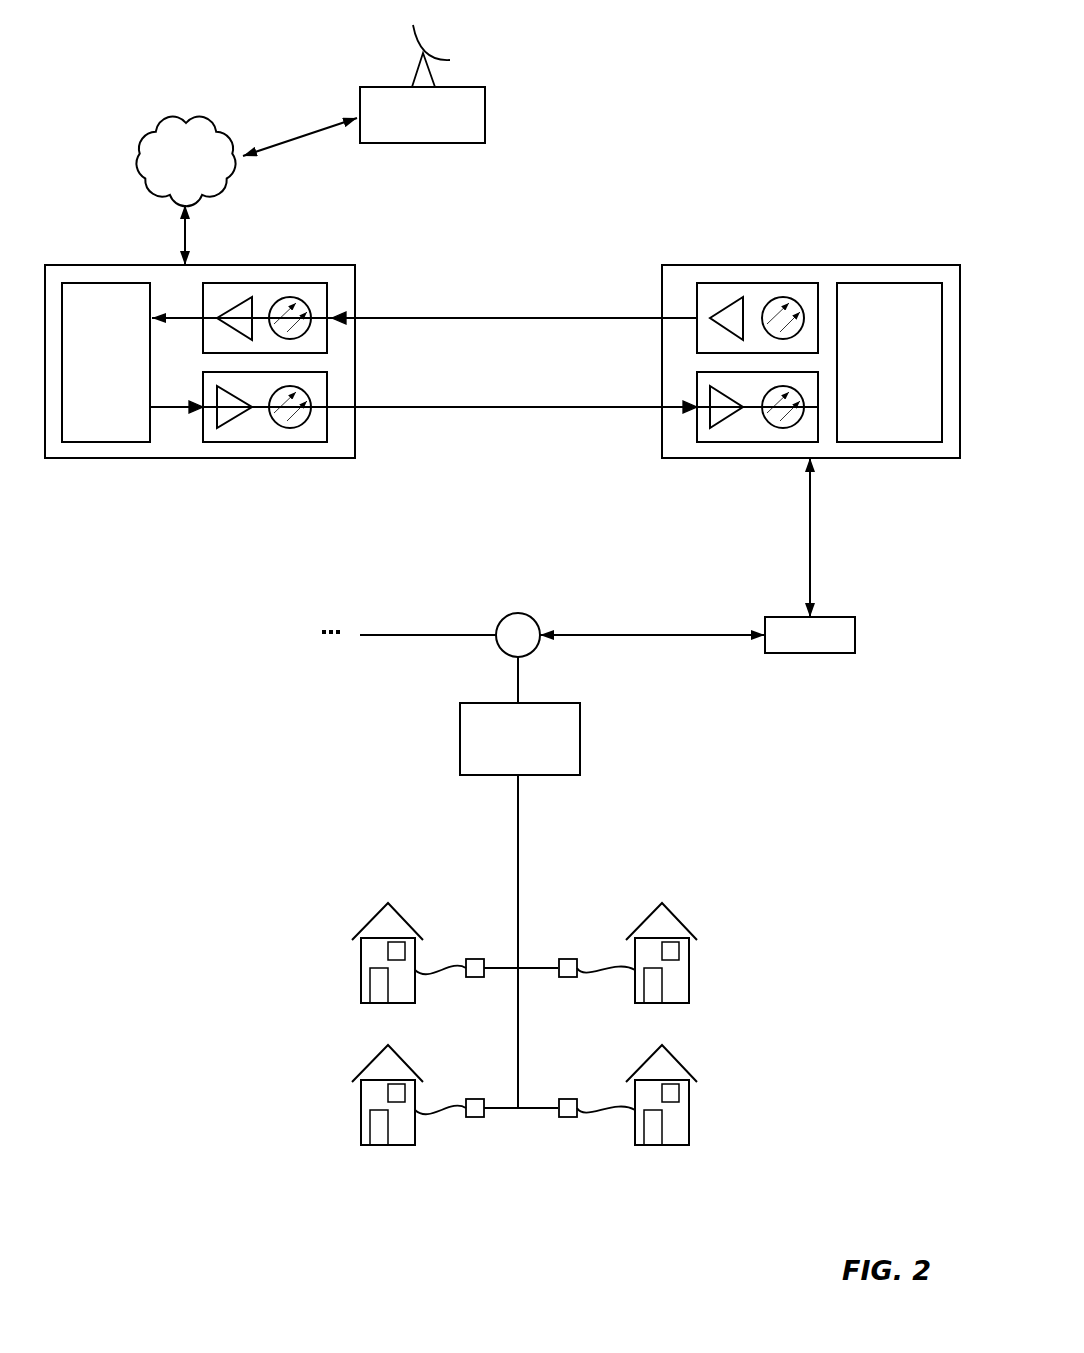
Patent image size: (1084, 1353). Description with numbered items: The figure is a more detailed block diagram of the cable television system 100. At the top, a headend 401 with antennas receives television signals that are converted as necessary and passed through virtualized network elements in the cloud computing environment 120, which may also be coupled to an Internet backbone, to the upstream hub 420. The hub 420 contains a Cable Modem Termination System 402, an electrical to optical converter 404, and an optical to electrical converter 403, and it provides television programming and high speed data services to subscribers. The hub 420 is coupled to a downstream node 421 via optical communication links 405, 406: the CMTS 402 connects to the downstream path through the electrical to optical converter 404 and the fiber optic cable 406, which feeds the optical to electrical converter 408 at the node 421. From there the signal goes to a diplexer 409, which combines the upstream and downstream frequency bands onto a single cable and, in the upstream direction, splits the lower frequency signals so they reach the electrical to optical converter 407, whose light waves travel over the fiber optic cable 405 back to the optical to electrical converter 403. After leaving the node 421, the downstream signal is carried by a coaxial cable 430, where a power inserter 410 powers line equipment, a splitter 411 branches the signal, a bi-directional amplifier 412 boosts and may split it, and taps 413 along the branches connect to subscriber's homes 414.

The cable television system 100 is at (775, 130).
The cloud computing environment 120 is at (185, 162).
The headend 401 is at (422, 84).
The CMTS 402 is at (106, 362).
The optical to electrical converter 403 is at (247, 283).
The electrical to optical converter 404 is at (263, 442).
The fiber optic cable 405 is at (507, 318).
The fiber optic cable 406 is at (455, 407).
The electrical to optical converter 407 is at (758, 283).
The optical to electrical converter 408 is at (757, 442).
The diplexer 409 is at (889, 362).
The power inserter 410 is at (697, 635).
The splitter 411 is at (518, 613).
The bi-directional amplifier 412 is at (520, 882).
The taps 413 is at (477, 960).
The subscriber's homes 414 is at (381, 905).
The hub 420 is at (152, 458).
The node 421 is at (937, 458).
The coaxial cable 430 is at (810, 563).